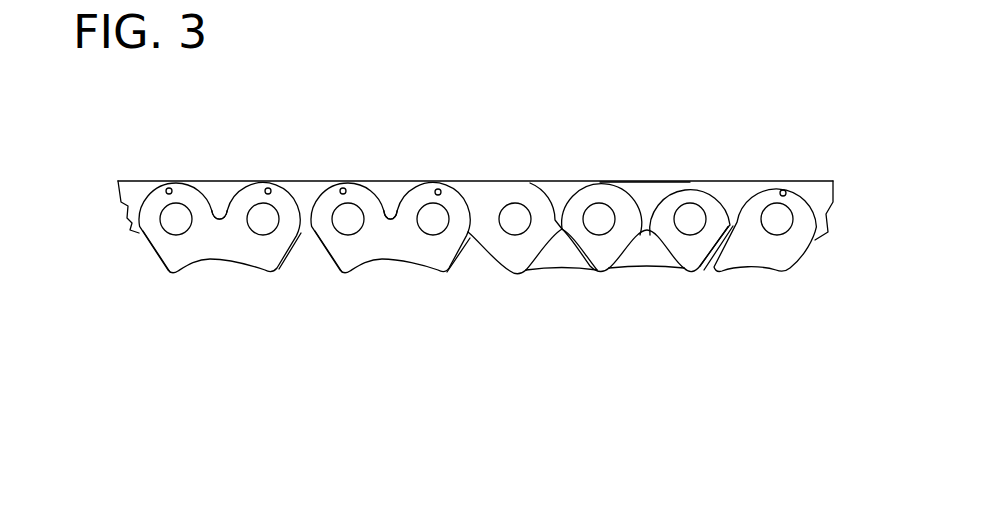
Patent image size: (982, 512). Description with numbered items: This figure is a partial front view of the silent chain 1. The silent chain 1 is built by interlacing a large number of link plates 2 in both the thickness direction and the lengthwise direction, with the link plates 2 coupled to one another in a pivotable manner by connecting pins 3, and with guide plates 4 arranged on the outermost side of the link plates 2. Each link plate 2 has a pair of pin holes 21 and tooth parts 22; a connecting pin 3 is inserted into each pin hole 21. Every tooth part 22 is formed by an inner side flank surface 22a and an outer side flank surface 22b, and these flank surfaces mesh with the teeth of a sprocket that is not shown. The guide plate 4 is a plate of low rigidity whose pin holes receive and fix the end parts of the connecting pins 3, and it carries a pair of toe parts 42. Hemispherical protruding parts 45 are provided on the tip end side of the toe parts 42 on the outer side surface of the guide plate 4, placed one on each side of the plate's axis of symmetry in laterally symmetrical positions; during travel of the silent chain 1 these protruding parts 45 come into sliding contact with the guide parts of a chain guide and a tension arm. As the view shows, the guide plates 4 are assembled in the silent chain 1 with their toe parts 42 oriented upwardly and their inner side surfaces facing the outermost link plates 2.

The silent chain 1 is at (500, 354).
The link plate 2 is at (611, 208).
The pin hole 21 is at (690, 207).
The tooth part 22 is at (697, 270).
The inner side flank surface 22a is at (502, 259).
The outer side flank surface 22b is at (718, 264).
The connecting pin 3 is at (169, 224).
The guide plate 4 is at (218, 257).
The toe part 42 is at (247, 195).
The protruding part 45 is at (343, 188).